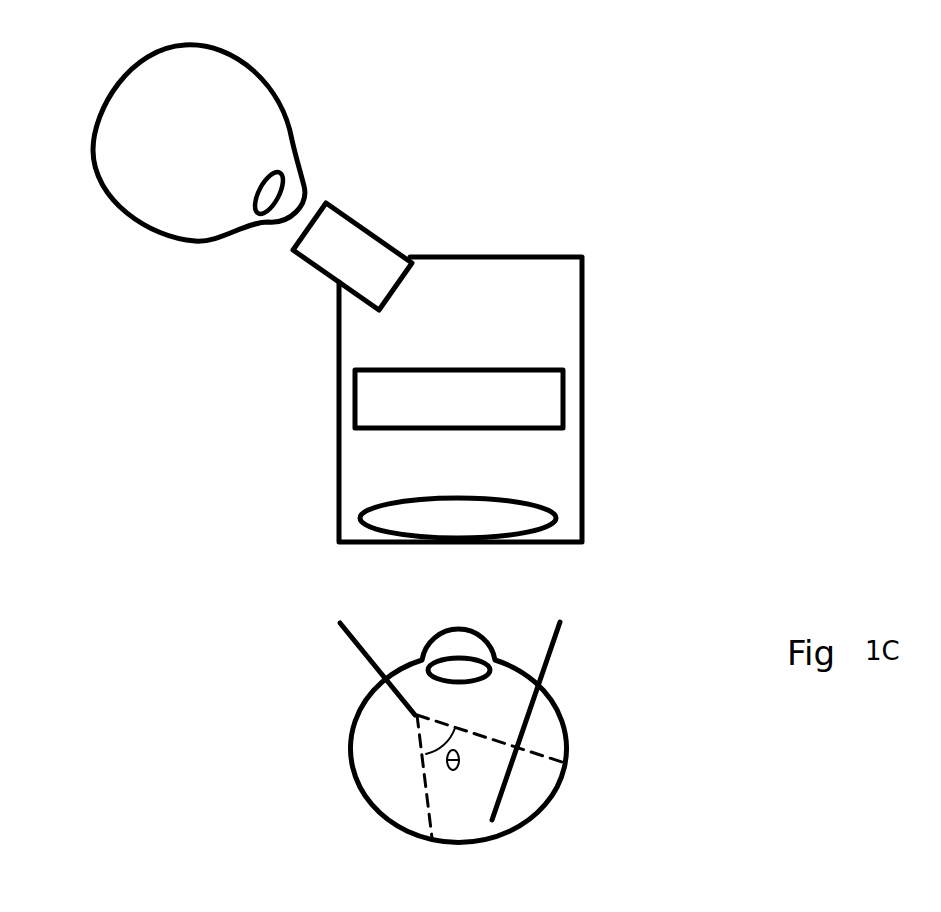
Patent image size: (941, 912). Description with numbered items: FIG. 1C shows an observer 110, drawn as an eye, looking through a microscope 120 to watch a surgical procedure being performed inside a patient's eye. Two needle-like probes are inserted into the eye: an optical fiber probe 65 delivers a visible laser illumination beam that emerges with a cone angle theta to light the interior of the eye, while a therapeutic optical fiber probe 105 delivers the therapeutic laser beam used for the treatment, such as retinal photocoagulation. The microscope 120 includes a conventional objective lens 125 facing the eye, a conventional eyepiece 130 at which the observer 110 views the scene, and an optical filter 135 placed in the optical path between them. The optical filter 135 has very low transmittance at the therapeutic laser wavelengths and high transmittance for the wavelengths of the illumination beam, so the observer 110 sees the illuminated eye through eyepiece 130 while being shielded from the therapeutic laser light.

The observer 110 is at (289, 94).
The eyepiece 130 is at (378, 238).
The microscope 120 is at (668, 252).
The optical filter 135 is at (563, 392).
The objective lens 125 is at (556, 510).
The optical fiber probe 65 is at (362, 672).
The therapeutic optical fiber probe 105 is at (552, 678).